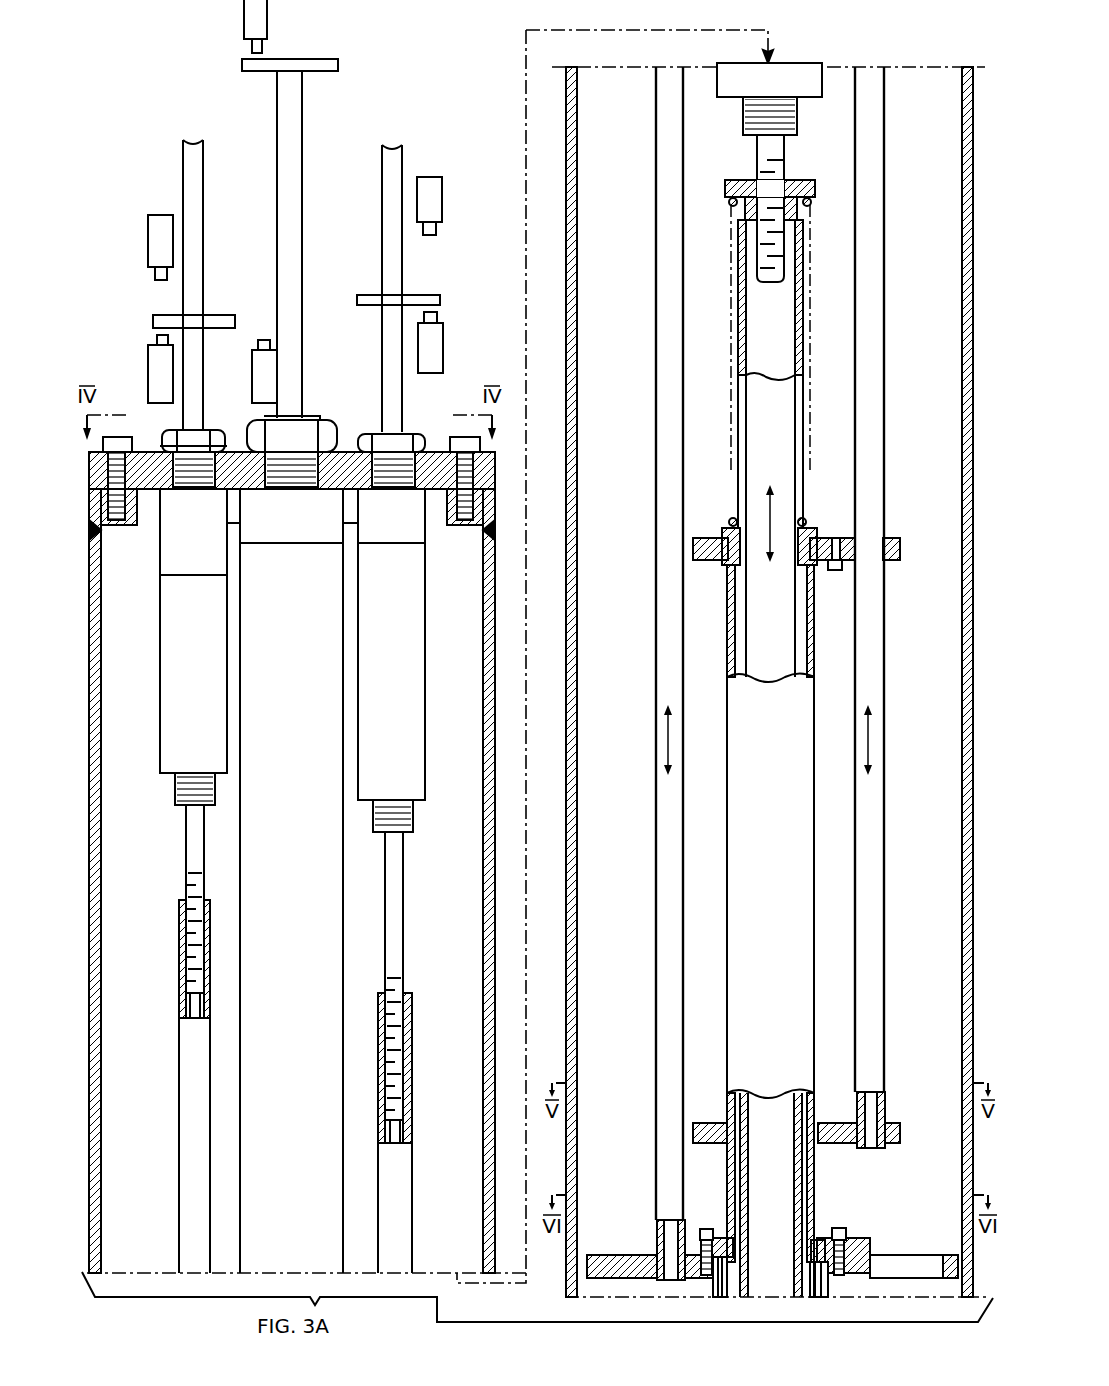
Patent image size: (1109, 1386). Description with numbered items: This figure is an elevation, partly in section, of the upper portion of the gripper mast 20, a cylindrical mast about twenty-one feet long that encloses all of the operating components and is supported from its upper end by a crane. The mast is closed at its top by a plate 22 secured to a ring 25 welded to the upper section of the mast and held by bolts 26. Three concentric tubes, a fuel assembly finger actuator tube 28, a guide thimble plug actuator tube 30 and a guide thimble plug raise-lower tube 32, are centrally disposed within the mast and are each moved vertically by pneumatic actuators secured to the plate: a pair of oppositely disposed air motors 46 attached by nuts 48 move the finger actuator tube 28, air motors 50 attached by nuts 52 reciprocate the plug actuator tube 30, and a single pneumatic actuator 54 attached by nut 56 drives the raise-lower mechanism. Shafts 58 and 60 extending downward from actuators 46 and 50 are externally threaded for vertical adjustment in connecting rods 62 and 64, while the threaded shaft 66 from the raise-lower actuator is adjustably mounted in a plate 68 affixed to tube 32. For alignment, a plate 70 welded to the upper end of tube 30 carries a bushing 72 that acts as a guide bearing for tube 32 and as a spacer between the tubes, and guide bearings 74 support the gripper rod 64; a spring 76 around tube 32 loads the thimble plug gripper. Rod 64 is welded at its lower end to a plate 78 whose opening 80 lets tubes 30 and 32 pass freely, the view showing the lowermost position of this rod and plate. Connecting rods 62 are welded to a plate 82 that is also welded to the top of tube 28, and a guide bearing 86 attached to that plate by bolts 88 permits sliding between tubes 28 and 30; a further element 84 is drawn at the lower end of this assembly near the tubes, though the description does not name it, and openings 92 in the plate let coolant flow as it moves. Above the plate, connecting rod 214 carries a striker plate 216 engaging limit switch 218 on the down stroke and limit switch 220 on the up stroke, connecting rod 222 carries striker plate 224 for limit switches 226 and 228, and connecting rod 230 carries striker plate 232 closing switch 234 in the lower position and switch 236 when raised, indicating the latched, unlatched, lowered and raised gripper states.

The gripper mast 20 is at (101, 713).
The plate 22 is at (493, 462).
The ring 25 is at (480, 525).
The bolts 26 is at (130, 442).
The fuel assembly finger actuator tube 28 is at (725, 1285).
The guide thimble plug actuator tube 30 is at (727, 620).
The guide thimble plug raise-lower tube 32 is at (800, 272).
The pneumatic actuators 46 is at (179, 656).
The nuts 48 is at (218, 436).
The air motors 50 is at (377, 656).
The nuts 52 is at (422, 438).
The pneumatic actuator 54 is at (277, 768).
The nut 56 is at (332, 436).
The shaft 58 is at (186, 830).
The shaft 60 is at (403, 887).
The connecting rods 62 is at (180, 943).
The connecting rods 64 is at (412, 1020).
The shaft 66 is at (757, 147).
The plate 68 is at (798, 182).
The plate 70 is at (836, 538).
The bushing 72 is at (730, 528).
The guide bearings 74 is at (893, 538).
The spring 76 is at (735, 450).
The plate 78 is at (900, 1135).
The opening 80 is at (820, 1140).
The plate 82 is at (870, 1255).
The spacer 84 is at (830, 1275).
The guide bearing 86 is at (720, 1238).
The bolts 88 is at (700, 1235).
The openings 92 is at (930, 1262).
The connecting rod 214 is at (203, 383).
The striker plate 216 is at (222, 315).
The limit switch 218 is at (150, 360).
The limit switch 220 is at (148, 245).
The connecting rod 222 is at (400, 393).
The striker plate 224 is at (420, 295).
The limit switch 226 is at (443, 336).
The limit switch 228 is at (442, 204).
The connecting rod 230 is at (302, 377).
The striker plate 232 is at (338, 66).
The switch 234 is at (277, 362).
The switch 236 is at (244, 25).